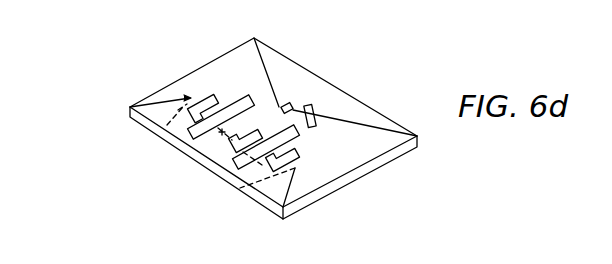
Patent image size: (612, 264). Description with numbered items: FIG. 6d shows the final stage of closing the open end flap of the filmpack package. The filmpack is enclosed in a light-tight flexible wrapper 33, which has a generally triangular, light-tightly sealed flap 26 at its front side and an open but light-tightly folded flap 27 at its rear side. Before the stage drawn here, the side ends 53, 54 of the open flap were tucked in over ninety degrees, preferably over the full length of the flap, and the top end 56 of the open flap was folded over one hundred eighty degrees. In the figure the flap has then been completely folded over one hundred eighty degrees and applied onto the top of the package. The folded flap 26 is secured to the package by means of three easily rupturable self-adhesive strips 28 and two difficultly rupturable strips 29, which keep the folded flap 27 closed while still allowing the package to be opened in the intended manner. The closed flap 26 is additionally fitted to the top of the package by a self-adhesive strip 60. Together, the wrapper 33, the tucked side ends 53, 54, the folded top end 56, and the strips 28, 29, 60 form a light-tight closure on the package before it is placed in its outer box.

The flap 26 is at (303, 77).
The light-tightly folded flap 27 is at (232, 186).
The rupturable sealing strips 28 is at (228, 167).
The non-rupturable strips 29 is at (268, 125).
The flexible wrapper 33 is at (348, 183).
The side end 53 is at (153, 115).
The side end 54 is at (273, 195).
The top end 56 is at (222, 137).
The self-adhesive strip 60 is at (317, 108).